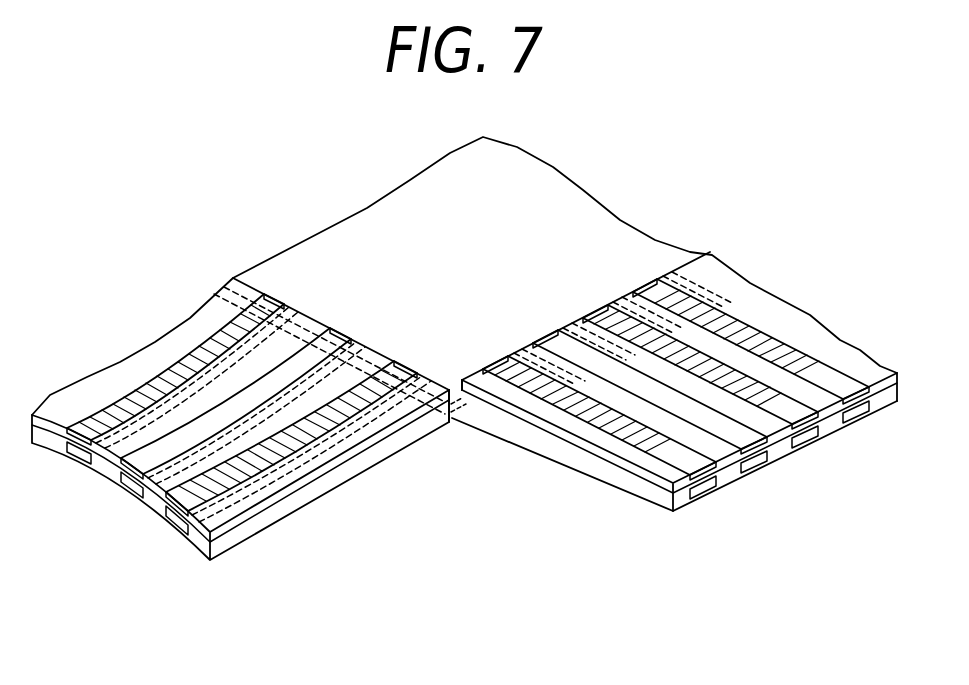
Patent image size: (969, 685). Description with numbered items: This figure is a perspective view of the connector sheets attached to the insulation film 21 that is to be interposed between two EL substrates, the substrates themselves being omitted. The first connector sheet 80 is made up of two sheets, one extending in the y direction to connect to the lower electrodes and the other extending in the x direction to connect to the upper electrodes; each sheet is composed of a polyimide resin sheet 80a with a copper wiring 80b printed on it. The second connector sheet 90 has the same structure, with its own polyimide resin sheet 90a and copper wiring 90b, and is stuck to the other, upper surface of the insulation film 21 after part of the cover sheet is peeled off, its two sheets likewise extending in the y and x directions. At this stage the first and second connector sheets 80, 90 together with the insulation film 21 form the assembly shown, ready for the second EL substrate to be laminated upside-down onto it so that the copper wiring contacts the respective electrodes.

The insulation film 21 is at (463, 418).
The first connector sheet 80 is at (262, 617).
The polyimide resin sheet 80a is at (222, 550).
The copper wiring 80b is at (173, 534).
The second connector sheet 90 is at (333, 440).
The polyimide resin sheet 90a is at (622, 467).
The copper wiring 90b is at (698, 477).